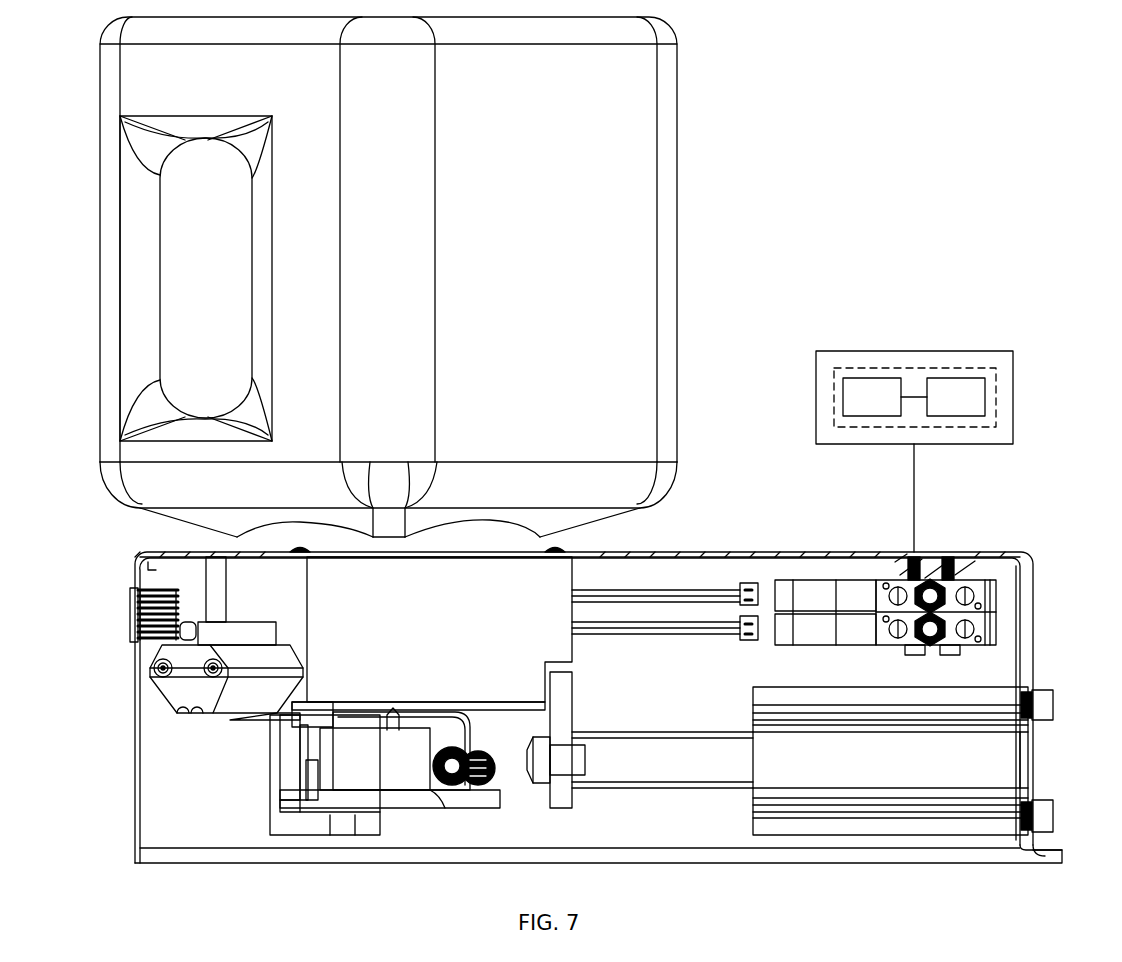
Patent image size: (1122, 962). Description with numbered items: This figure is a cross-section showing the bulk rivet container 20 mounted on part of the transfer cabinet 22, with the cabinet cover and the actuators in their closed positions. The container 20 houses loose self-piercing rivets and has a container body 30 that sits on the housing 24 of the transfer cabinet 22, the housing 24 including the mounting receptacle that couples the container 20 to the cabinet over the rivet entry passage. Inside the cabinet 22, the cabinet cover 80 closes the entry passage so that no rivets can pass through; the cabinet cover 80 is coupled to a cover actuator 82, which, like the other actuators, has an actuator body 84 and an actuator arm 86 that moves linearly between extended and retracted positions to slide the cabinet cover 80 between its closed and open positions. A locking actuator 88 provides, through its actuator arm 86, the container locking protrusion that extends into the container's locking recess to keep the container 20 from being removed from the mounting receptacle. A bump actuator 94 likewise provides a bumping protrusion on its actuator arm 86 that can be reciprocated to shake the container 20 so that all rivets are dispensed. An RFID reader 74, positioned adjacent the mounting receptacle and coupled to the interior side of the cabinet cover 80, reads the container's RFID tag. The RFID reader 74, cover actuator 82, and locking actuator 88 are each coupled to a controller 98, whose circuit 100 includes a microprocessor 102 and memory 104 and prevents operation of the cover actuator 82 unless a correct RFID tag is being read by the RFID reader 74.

The bulk rivet container 20 is at (684, 80).
The container body 30 is at (640, 258).
The transfer cabinet 22 is at (1042, 565).
The housing 24 is at (745, 541).
The controller 98 is at (914, 351).
The circuit 100 is at (834, 397).
The microprocessor 102 is at (892, 409).
The memory 104 is at (976, 409).
The cabinet cover 80 is at (412, 706).
The locking actuator 88 is at (222, 710).
The bump actuator 94 is at (285, 775).
The RFID reader 74 is at (417, 778).
The actuator arm 86 is at (675, 770).
The cover actuator 82 is at (818, 846).
The actuator body 84 is at (930, 800).